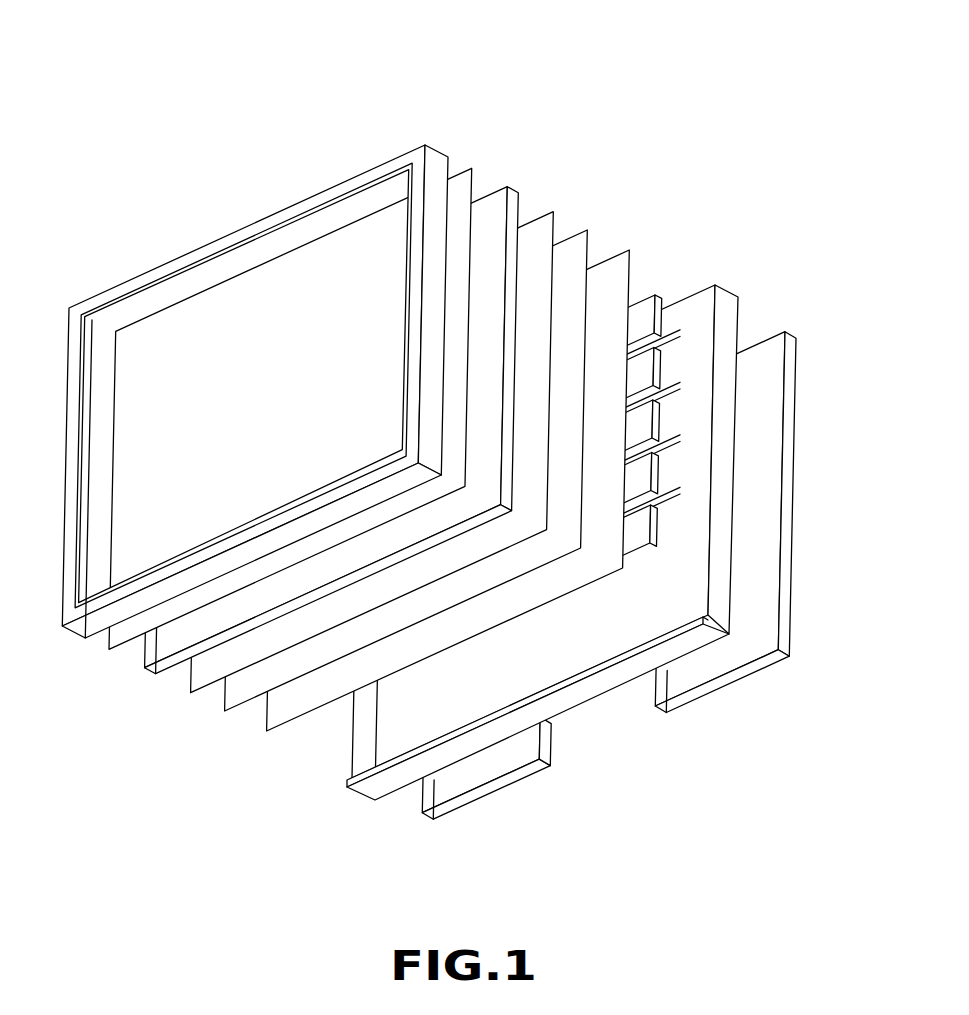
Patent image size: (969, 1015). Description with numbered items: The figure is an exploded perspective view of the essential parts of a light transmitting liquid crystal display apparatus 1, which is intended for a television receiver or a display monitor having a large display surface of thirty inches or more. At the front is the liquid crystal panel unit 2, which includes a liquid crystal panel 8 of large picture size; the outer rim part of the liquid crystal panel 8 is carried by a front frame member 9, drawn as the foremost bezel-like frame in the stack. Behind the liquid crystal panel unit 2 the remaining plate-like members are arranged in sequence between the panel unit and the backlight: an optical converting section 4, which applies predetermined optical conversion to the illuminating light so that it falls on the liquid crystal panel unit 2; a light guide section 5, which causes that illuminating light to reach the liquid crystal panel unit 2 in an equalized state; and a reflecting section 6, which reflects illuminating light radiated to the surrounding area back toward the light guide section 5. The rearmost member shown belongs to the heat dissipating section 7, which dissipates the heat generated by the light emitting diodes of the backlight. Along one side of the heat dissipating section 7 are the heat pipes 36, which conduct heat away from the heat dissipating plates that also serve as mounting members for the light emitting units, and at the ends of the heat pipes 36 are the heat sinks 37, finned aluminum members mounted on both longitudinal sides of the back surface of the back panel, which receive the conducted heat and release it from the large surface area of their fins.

The liquid crystal display apparatus 1 is at (466, 448).
The liquid crystal panel unit 2 is at (122, 714).
The optical converting section 4 is at (226, 718).
The light guide section 5 is at (292, 737).
The reflecting section 6 is at (418, 680).
The heat dissipating section 7 is at (636, 575).
The liquid crystal panel 8 is at (162, 642).
The front frame member 9 is at (63, 627).
The heat pipes 36 is at (688, 371).
The heat sinks 37 is at (497, 765).